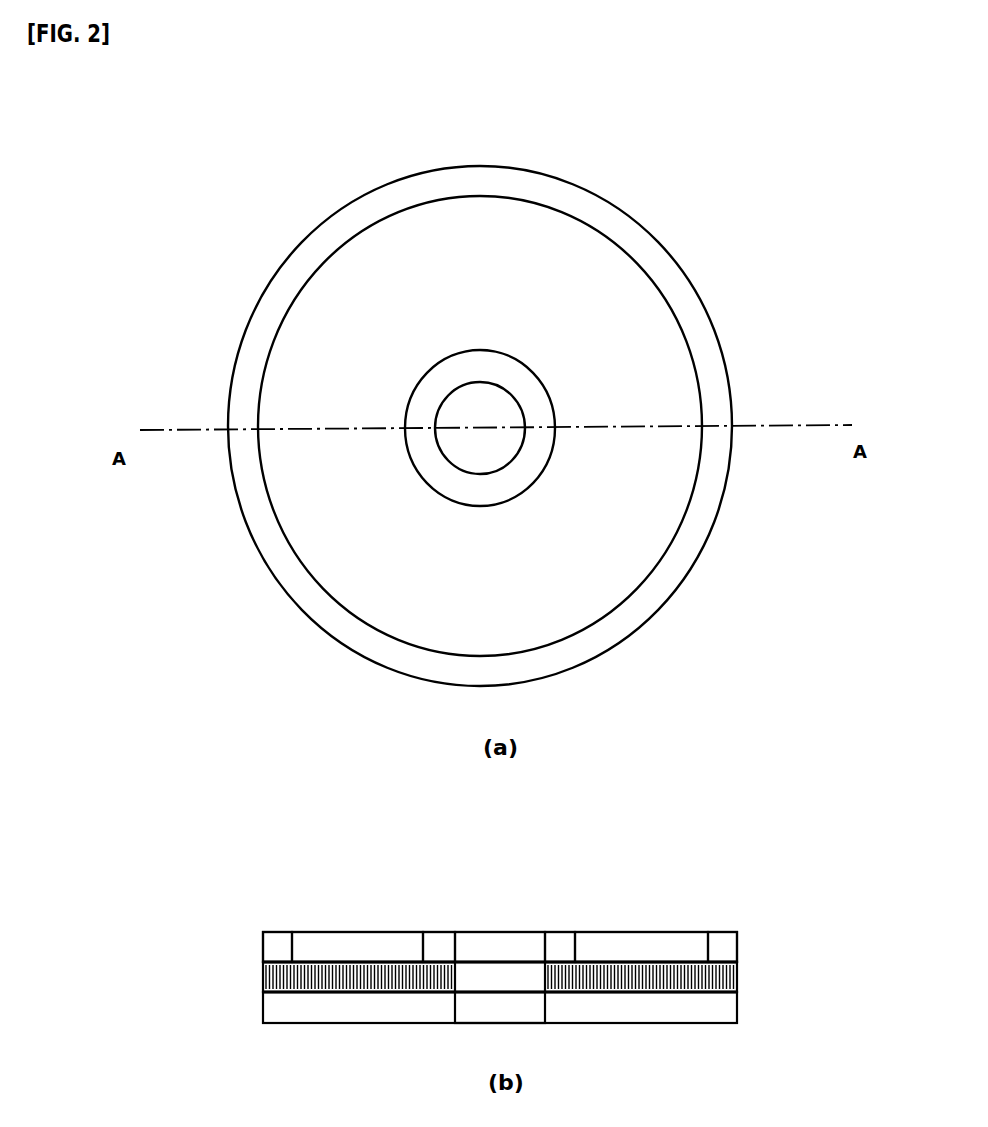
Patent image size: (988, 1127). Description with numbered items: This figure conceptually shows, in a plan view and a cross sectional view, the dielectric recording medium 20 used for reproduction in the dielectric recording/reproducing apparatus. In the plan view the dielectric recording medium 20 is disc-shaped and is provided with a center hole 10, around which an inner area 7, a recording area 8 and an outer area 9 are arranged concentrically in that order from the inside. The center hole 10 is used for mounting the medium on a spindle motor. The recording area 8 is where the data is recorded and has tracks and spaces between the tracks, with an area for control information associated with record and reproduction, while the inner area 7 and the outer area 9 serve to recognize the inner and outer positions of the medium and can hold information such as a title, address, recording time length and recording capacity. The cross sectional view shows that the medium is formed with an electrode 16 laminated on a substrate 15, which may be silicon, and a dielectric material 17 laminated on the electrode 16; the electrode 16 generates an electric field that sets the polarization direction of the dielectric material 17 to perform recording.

The dielectric recording medium 20 is at (646, 138).
The center hole 10 is at (497, 418).
The inner area 7 is at (525, 460).
The recording area 8 is at (640, 513).
The outer area 9 is at (682, 555).
The dielectric material 17 is at (737, 944).
The electrode 16 is at (737, 976).
The substrate 15 is at (737, 1009).